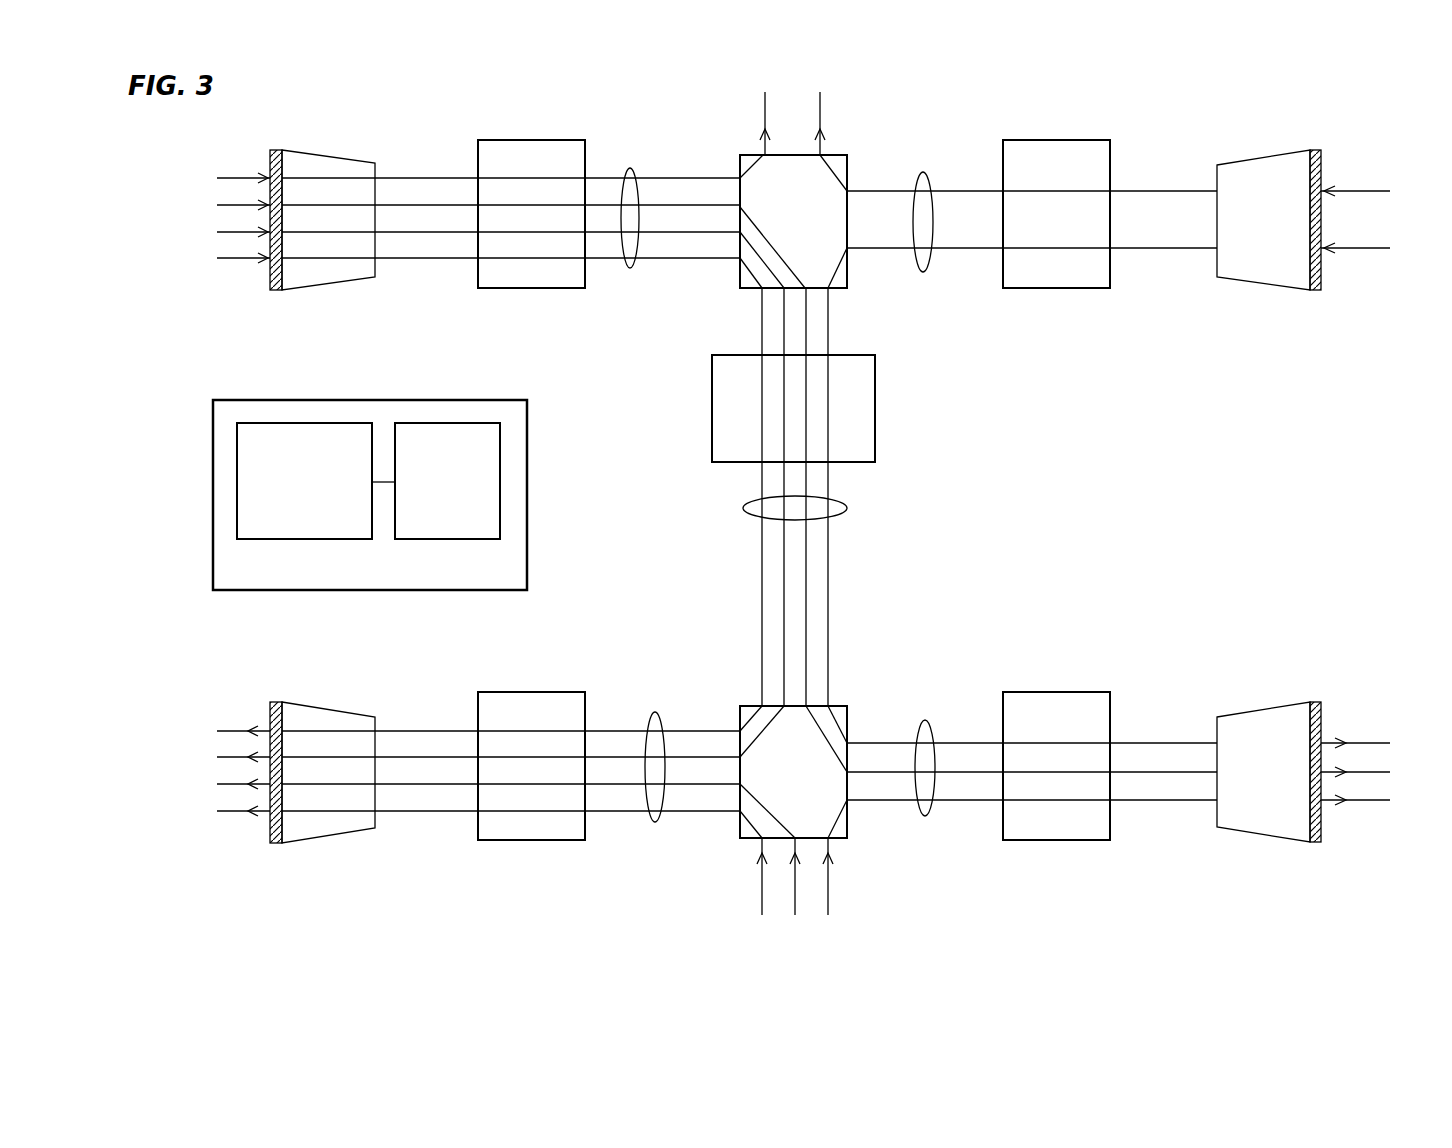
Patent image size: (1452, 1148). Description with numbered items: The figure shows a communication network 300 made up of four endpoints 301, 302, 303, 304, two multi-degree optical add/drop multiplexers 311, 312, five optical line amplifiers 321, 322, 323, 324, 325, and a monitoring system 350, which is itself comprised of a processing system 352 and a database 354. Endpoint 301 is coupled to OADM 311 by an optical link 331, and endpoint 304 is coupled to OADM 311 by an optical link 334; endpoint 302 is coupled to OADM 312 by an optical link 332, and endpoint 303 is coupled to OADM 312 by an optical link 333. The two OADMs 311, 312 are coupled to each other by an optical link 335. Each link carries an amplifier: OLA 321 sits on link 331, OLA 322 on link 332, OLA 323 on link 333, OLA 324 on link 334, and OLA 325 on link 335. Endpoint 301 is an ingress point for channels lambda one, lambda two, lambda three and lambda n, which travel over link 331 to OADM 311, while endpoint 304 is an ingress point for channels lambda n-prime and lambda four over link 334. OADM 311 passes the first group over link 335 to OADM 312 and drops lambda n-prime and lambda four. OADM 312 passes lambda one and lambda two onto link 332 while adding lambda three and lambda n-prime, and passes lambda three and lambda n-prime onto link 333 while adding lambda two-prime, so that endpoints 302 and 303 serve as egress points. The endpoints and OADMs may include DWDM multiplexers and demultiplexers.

The communication network 300 is at (1260, 436).
The endpoint 301 is at (313, 156).
The endpoint 302 is at (317, 706).
The endpoint 303 is at (1265, 707).
The endpoint 304 is at (1262, 157).
The optical add/drop multiplexer 311 is at (847, 278).
The optical add/drop multiplexer 312 is at (848, 828).
The optical line amplifier 321 is at (510, 288).
The optical line amplifier 322 is at (563, 692).
The optical line amplifier 323 is at (1027, 692).
The optical line amplifier 324 is at (1068, 288).
The optical line amplifier 325 is at (712, 433).
The optical link 331 is at (630, 268).
The optical link 332 is at (655, 712).
The optical link 333 is at (925, 720).
The optical link 334 is at (923, 172).
The optical link 335 is at (847, 506).
The monitoring system 350 is at (456, 583).
The processing system 352 is at (288, 525).
The database 354 is at (430, 525).